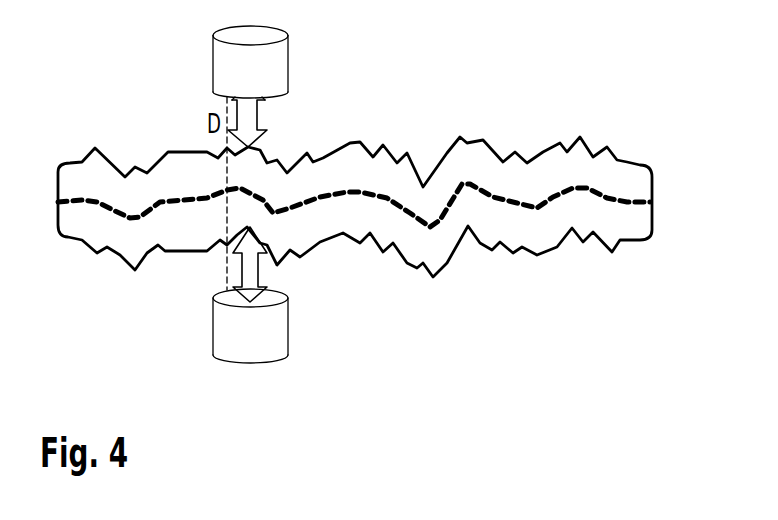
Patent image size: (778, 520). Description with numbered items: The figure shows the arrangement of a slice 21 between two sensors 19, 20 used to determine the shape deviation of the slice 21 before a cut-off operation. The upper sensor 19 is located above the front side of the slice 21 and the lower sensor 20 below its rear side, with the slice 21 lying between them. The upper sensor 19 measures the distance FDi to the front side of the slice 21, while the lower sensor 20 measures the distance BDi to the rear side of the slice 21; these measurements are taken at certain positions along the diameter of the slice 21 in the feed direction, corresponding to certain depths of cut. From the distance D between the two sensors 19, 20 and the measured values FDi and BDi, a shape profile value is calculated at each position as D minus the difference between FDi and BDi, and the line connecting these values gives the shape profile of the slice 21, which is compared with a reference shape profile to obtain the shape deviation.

The upper sensor 19 is at (213, 68).
The lower sensor 20 is at (213, 327).
The slice 21 is at (630, 158).
The distance of the upper sensor from the front side of the slice FDi is at (258, 120).
The distance of the lower sensor from the rear side of the slice BDi is at (257, 273).